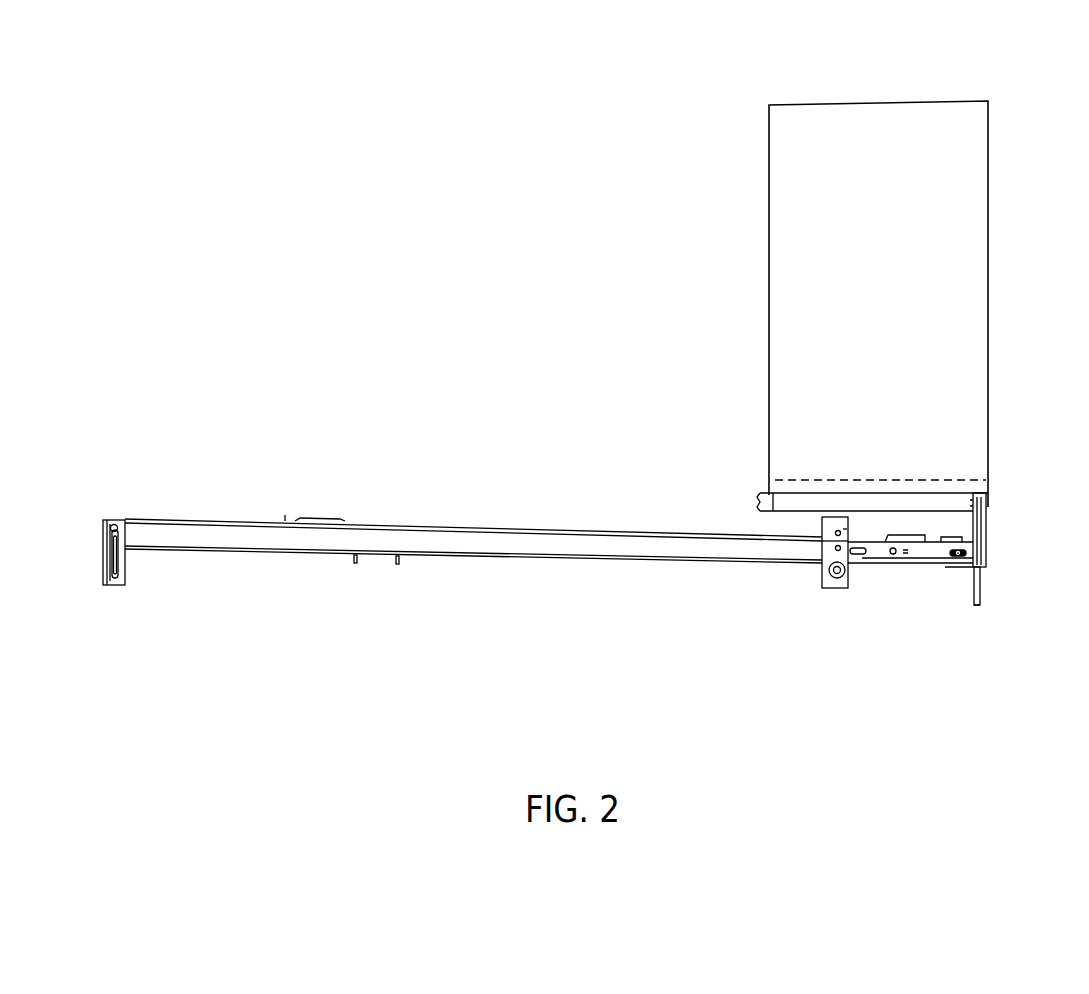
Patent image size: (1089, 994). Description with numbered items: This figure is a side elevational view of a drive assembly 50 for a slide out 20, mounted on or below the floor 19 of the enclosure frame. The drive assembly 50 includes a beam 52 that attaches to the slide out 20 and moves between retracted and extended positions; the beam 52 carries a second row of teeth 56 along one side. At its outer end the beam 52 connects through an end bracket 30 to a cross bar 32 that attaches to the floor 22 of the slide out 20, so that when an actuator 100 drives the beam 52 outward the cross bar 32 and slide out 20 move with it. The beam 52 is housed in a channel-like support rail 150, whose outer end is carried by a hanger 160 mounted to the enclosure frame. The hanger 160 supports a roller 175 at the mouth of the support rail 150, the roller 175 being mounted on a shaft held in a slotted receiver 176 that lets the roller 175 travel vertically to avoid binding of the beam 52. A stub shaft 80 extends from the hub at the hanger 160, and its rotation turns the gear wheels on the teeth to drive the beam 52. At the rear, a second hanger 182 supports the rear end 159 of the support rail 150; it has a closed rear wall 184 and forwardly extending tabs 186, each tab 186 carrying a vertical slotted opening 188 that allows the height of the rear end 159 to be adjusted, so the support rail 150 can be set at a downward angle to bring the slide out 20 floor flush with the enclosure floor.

The slide out 20 is at (958, 193).
The floor of slide out 22 is at (975, 487).
The cross bar 32 is at (990, 503).
The end bracket 30 is at (998, 537).
The floor 19 is at (800, 498).
The support rail 150 is at (439, 522).
The actuator 100 is at (322, 519).
The stub shaft 80 is at (830, 574).
The second row of teeth 56 is at (868, 565).
The slotted receiver 176 is at (841, 527).
The hanger 160 is at (828, 527).
The roller 175 is at (848, 530).
The drive assembly 50 is at (880, 578).
The beam 52 is at (920, 564).
The second hanger 182 is at (98, 540).
The rear wall 184 is at (102, 563).
The tab 186 is at (123, 584).
The slotted opening 188 is at (117, 568).
The rear end of support rail 159 is at (116, 521).